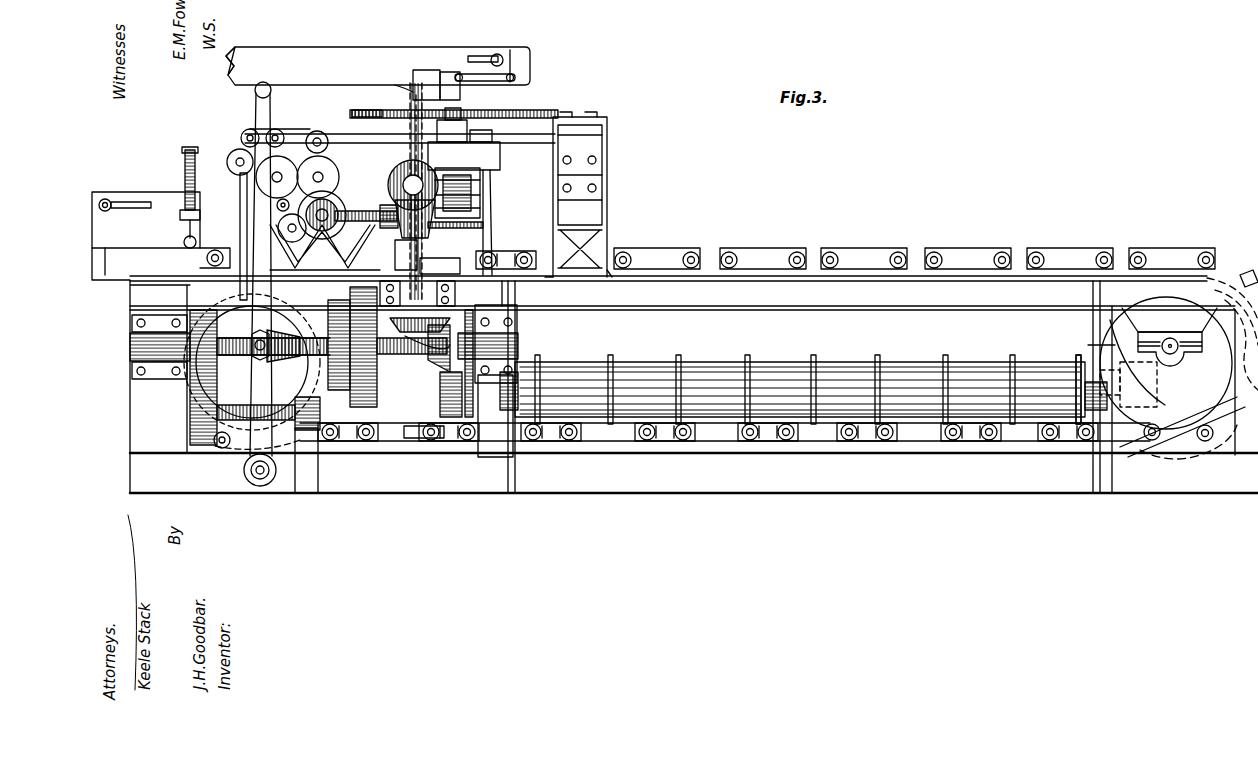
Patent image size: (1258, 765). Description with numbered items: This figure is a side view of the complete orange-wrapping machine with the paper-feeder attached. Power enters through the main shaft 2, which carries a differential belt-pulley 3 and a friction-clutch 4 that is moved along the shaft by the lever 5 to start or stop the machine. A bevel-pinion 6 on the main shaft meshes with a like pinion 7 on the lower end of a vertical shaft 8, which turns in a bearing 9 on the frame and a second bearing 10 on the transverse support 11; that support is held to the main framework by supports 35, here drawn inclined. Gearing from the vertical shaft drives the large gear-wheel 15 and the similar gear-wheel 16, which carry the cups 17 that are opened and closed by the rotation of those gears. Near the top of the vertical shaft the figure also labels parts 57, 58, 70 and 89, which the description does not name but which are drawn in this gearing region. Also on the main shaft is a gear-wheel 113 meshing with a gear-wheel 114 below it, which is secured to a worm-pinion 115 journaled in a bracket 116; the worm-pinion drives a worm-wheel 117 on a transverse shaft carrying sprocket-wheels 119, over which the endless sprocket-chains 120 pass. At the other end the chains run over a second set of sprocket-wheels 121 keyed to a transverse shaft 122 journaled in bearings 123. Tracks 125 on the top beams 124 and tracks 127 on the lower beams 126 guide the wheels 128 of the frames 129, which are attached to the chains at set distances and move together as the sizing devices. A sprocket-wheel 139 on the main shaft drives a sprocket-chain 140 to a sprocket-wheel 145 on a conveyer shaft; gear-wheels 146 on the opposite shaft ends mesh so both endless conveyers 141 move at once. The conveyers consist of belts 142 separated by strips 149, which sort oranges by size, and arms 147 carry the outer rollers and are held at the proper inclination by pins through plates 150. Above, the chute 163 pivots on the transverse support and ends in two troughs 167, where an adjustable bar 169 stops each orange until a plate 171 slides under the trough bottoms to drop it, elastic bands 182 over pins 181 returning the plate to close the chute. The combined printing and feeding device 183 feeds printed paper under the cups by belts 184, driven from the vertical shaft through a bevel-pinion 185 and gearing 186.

The main shaft 2 is at (425, 355).
The differential belt-pulley 3 is at (352, 343).
The friction-clutch 4 is at (263, 362).
The lever 5 is at (303, 318).
The bevel-pinion 6 is at (428, 372).
The bevel-pinion 7 is at (440, 322).
The vertical shaft 8 is at (425, 258).
The bearing 9 is at (452, 293).
The bearing 10 is at (410, 152).
The transverse support 11 is at (492, 160).
The gear-wheel 15 is at (556, 116).
The gear-wheel 16 is at (485, 212).
The cups 17 is at (495, 110).
The supports 35 is at (500, 215).
The driving shaft 57 is at (392, 185).
The bevel gear 58 is at (397, 177).
The bracket rod 70 is at (490, 230).
The worm gear 89 is at (485, 183).
The gear-wheel 113 is at (160, 325).
The gear-wheel 114 is at (190, 410).
The worm-pinion 115 is at (222, 448).
The bracket 116 is at (318, 470).
The worm-wheel 117 is at (252, 361).
The sprocket-wheels 119 is at (320, 388).
The sprocket-chains 120 is at (408, 432).
The sprocket-wheels 121 is at (1166, 363).
The transverse shaft 122 is at (1178, 352).
The bearings 123 is at (1169, 337).
The top beams 124 is at (942, 305).
The tracks 125 is at (865, 272).
The lower beams 126 is at (694, 473).
The tracks 127 is at (815, 445).
The wheels 128 is at (690, 256).
The frames 129 is at (718, 440).
The sprocket-wheel 139 is at (455, 365).
The sprocket-chain 140 is at (517, 321).
The endless conveyers 141 is at (808, 378).
The belts 142 is at (725, 354).
The sprocket-wheel 145 is at (462, 405).
The gear-wheels 146 is at (1140, 370).
The arms 147 is at (505, 410).
The strips 149 is at (888, 352).
The plates 150 is at (517, 340).
The chute 163 is at (478, 58).
The troughs 167 is at (522, 66).
The bar 169 is at (503, 58).
The plate 171 is at (417, 81).
The pins 181 is at (520, 80).
The elastic bands 182 is at (470, 70).
The combined printing and feeding device 183 is at (161, 207).
The belts 184 is at (320, 133).
The bevel-pinion 185 is at (430, 230).
The gearing 186 is at (392, 210).